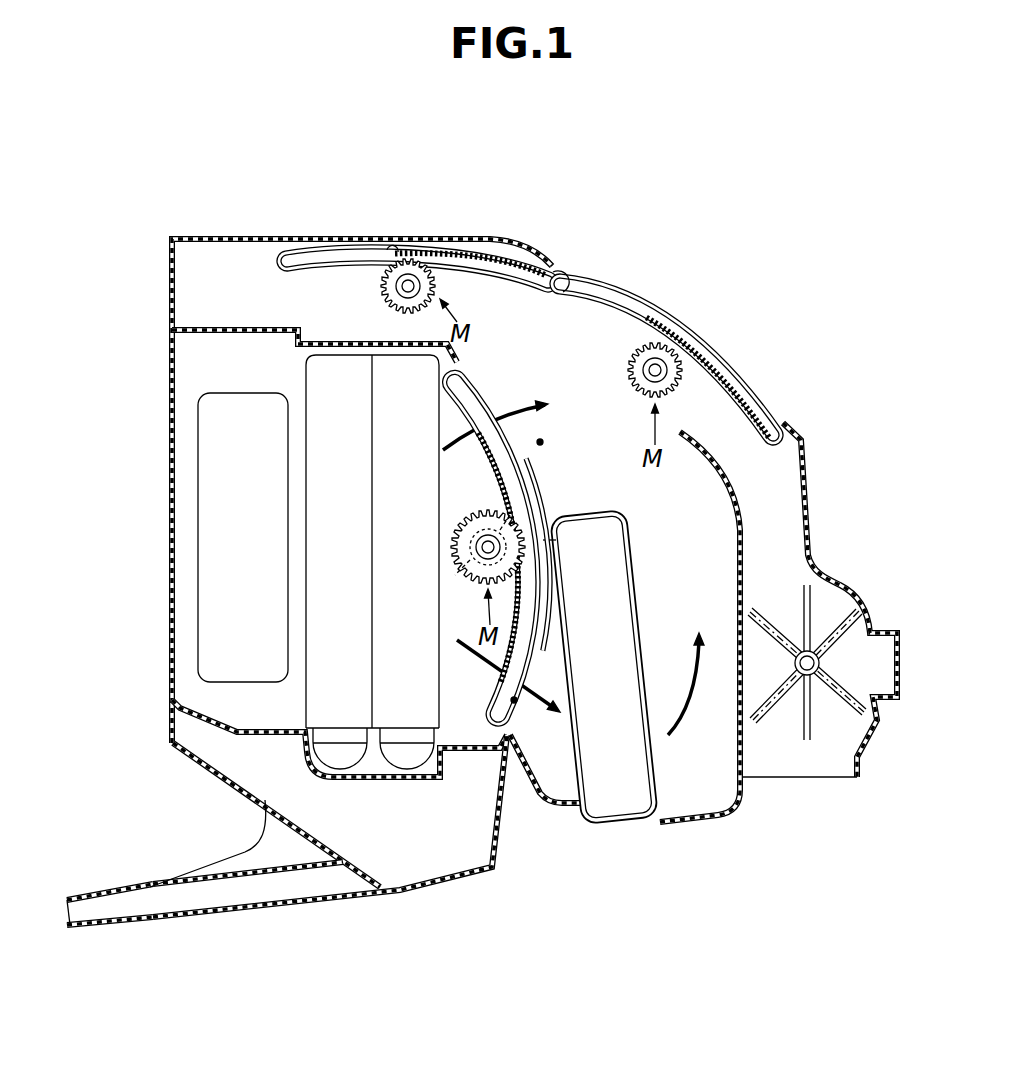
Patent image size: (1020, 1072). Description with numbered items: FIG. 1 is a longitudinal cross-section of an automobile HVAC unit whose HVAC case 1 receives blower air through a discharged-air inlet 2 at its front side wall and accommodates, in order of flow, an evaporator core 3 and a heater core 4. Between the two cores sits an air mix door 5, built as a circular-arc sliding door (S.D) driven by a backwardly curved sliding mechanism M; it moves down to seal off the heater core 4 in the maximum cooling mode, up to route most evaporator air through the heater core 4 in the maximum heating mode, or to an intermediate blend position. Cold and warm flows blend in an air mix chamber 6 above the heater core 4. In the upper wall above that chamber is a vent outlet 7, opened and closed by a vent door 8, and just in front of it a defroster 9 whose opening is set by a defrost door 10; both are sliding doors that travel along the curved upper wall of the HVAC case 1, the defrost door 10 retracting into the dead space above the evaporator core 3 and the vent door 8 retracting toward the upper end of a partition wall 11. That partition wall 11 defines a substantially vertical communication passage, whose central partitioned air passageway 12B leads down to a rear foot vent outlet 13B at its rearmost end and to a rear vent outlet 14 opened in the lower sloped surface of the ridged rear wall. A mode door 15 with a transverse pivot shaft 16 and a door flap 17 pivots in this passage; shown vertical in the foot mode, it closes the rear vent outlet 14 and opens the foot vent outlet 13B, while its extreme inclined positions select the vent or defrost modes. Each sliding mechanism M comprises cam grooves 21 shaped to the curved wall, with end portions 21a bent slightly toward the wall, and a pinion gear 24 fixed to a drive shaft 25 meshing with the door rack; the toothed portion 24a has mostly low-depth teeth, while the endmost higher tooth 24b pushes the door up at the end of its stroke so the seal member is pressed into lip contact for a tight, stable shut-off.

The HVAC case 1 is at (230, 235).
The discharged-air inlet 2 is at (203, 593).
The evaporator core 3 is at (433, 692).
The heater core 4 is at (627, 595).
The air mix door 5 is at (527, 487).
The air mix chamber 6 is at (628, 481).
The vent outlet 7 is at (652, 306).
The vent door 8 is at (720, 367).
The defroster 9 is at (465, 243).
The defrost door 10 is at (500, 296).
The partition wall 11 is at (723, 500).
The central partitioned air passageway 12B is at (773, 493).
The foot vent outlet 13B is at (793, 777).
The rear vent outlet 14 is at (843, 623).
The mode door 15 is at (820, 708).
The pivot shaft 16 is at (813, 673).
The door flap 17 is at (810, 600).
The cam groove 21 is at (297, 258).
The frontmost end portion 21a is at (393, 250).
The pinion gear 24 is at (393, 303).
The toothed portion 24a is at (380, 292).
The higher tooth 24b is at (645, 330).
The drive shaft 25 is at (410, 282).